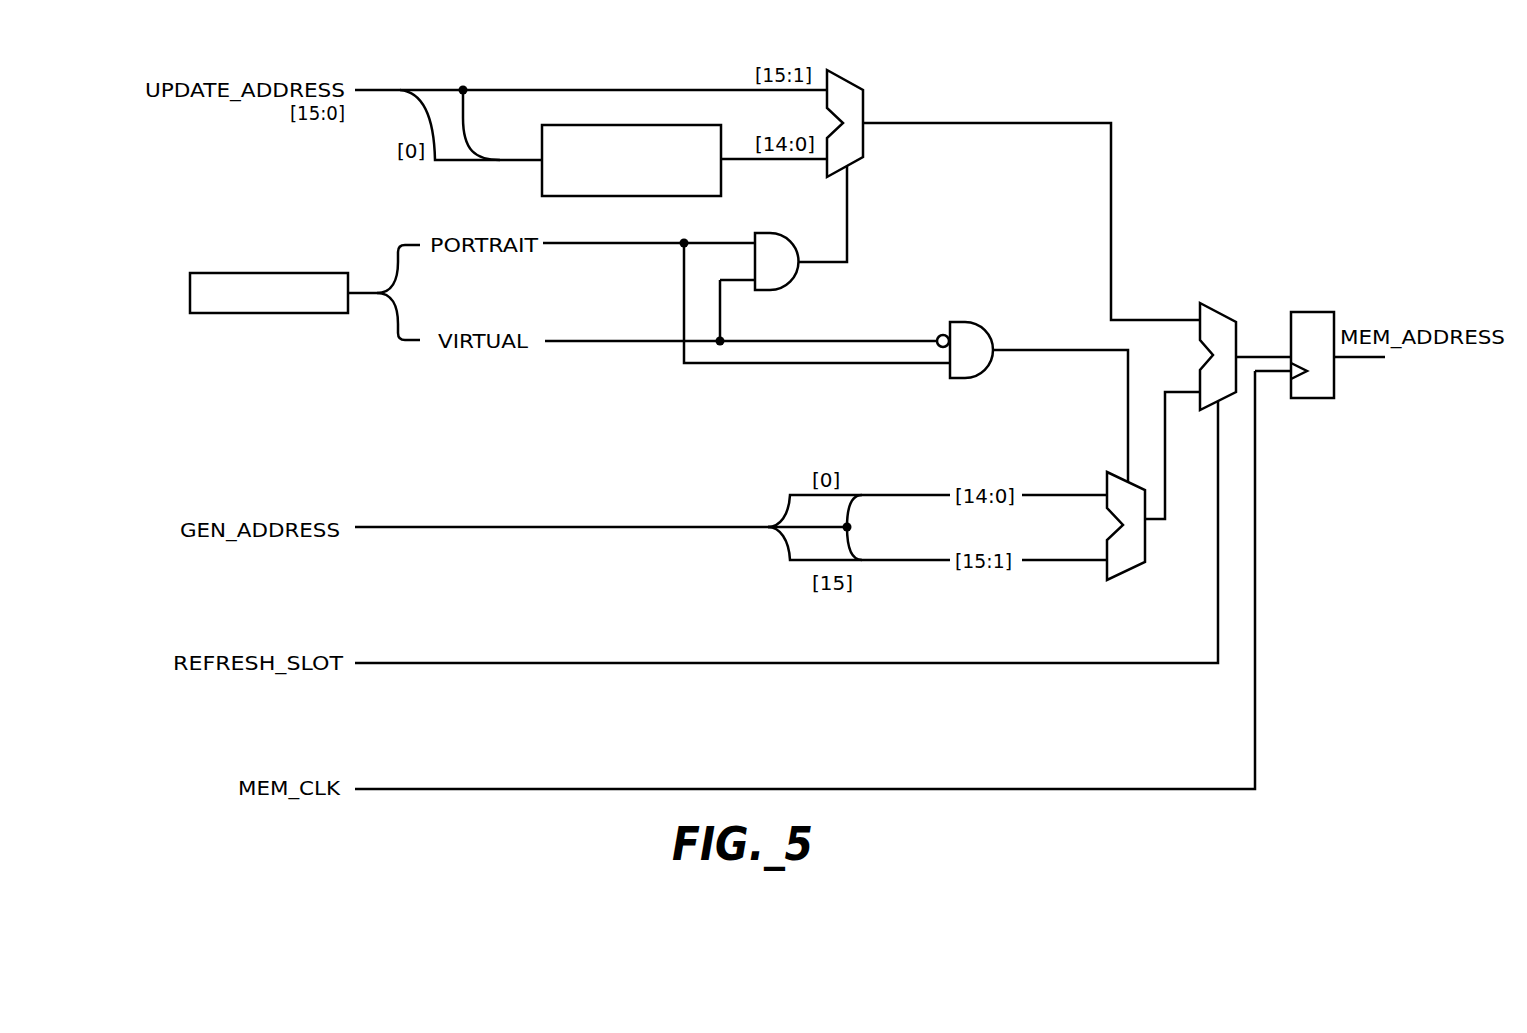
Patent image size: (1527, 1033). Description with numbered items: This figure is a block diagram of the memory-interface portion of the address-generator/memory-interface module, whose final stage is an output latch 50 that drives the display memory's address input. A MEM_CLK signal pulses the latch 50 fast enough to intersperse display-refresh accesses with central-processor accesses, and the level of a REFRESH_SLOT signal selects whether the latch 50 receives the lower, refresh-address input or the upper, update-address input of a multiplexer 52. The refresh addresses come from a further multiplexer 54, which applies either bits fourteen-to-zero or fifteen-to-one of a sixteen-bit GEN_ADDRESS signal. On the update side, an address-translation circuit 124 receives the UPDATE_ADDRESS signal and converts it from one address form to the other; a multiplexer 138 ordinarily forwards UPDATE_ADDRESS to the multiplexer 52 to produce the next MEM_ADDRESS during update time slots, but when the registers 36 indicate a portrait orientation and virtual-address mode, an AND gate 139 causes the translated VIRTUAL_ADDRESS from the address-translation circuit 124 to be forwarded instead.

The registers 36 is at (250, 273).
The output latch 50 is at (1305, 312).
The multiplexer 52 is at (1207, 303).
The multiplexer 54 is at (1116, 473).
The address-translation circuit 124 is at (541, 183).
The multiplexer 138 is at (842, 72).
The AND gate 139 is at (761, 233).